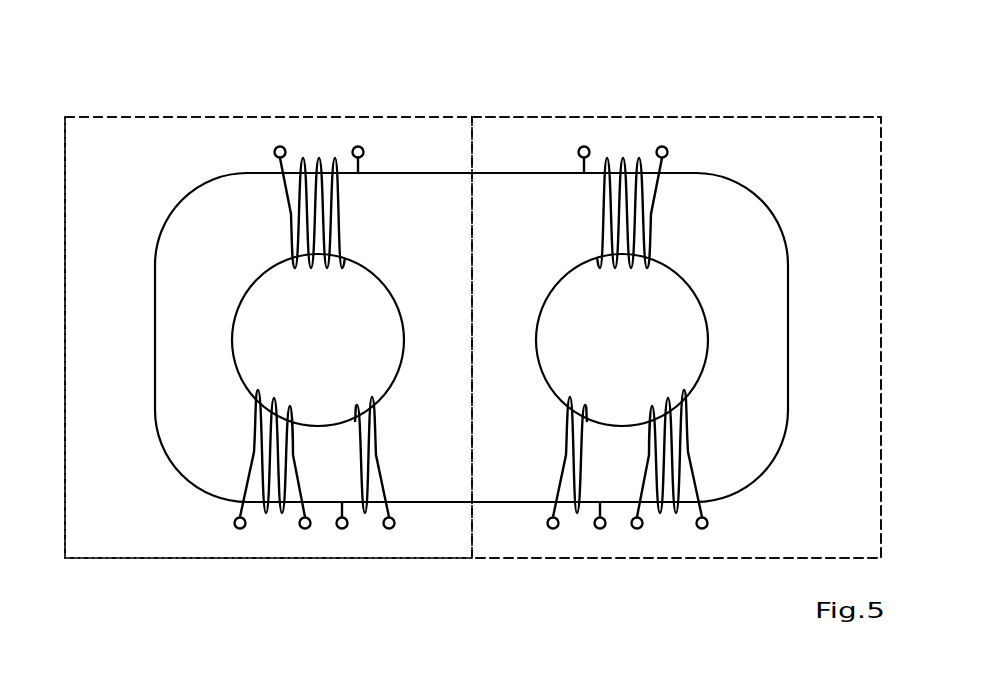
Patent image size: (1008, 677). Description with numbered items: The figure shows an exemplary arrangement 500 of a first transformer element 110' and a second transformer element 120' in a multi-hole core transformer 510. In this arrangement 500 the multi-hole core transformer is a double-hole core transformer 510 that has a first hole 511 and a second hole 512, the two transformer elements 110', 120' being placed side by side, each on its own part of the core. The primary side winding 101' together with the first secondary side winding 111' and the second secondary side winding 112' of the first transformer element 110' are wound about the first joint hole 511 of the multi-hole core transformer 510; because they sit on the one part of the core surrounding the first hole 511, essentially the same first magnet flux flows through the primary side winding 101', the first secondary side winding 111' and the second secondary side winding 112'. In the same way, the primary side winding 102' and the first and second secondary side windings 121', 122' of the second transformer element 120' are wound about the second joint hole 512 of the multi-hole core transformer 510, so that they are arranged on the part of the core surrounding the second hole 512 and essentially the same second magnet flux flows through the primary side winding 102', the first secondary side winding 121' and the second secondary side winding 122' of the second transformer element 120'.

The exemplary arrangement 500 is at (803, 93).
The first transformer element 110' is at (268, 315).
The second transformer element 120' is at (676, 315).
The multi-hole core transformer 510 is at (788, 297).
The first hole 511 is at (265, 343).
The second hole 512 is at (707, 338).
The primary side winding 101' is at (293, 208).
The primary side winding 102' is at (652, 208).
The first secondary side winding 111' is at (249, 459).
The second secondary side winding 112' is at (397, 463).
The first secondary side winding 121' is at (548, 463).
The second secondary side winding 122' is at (697, 459).